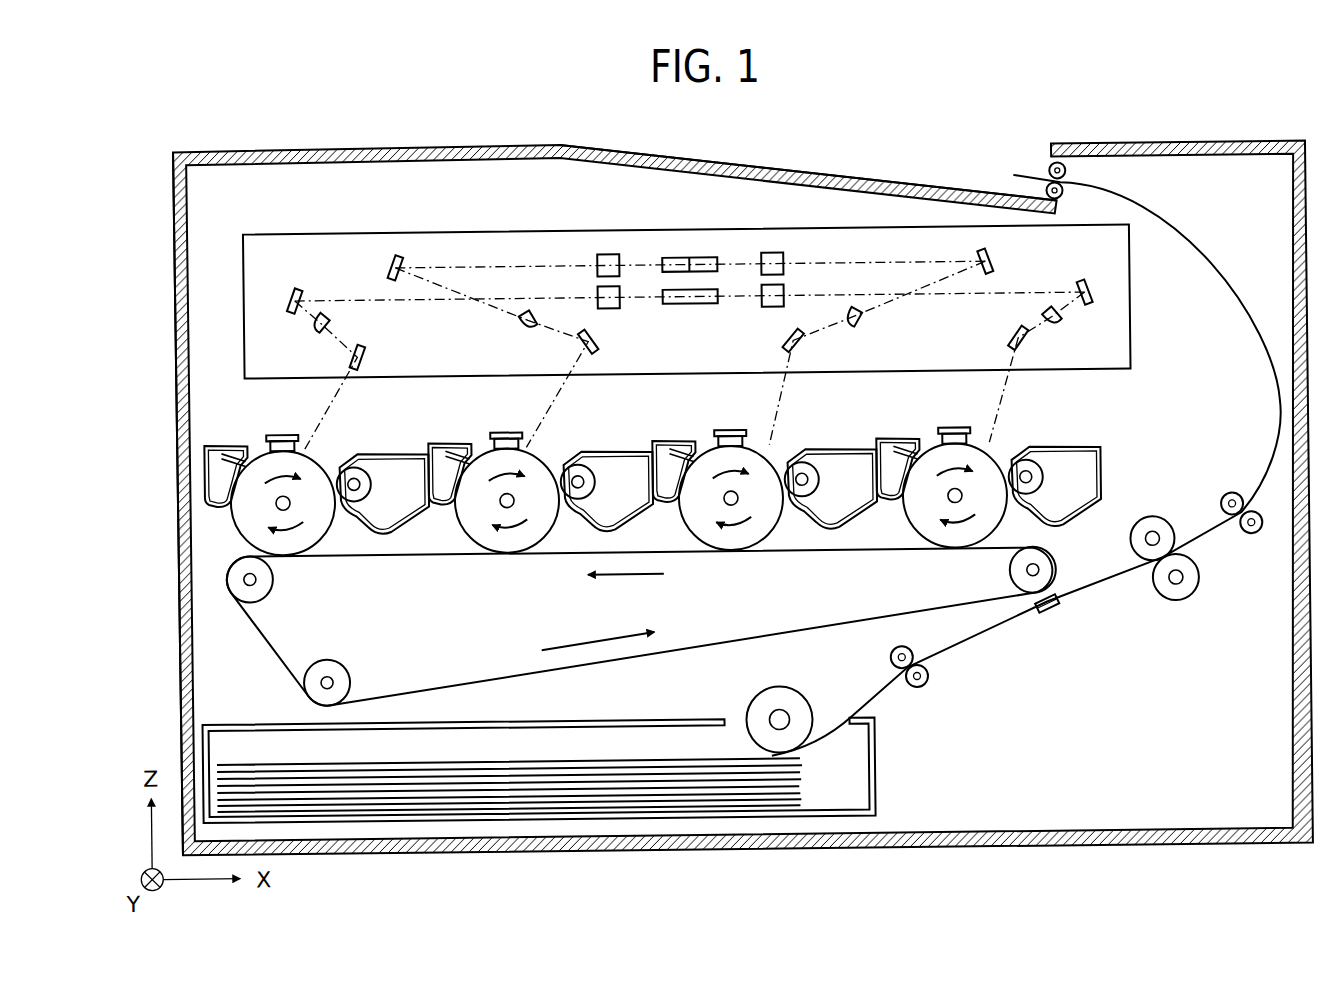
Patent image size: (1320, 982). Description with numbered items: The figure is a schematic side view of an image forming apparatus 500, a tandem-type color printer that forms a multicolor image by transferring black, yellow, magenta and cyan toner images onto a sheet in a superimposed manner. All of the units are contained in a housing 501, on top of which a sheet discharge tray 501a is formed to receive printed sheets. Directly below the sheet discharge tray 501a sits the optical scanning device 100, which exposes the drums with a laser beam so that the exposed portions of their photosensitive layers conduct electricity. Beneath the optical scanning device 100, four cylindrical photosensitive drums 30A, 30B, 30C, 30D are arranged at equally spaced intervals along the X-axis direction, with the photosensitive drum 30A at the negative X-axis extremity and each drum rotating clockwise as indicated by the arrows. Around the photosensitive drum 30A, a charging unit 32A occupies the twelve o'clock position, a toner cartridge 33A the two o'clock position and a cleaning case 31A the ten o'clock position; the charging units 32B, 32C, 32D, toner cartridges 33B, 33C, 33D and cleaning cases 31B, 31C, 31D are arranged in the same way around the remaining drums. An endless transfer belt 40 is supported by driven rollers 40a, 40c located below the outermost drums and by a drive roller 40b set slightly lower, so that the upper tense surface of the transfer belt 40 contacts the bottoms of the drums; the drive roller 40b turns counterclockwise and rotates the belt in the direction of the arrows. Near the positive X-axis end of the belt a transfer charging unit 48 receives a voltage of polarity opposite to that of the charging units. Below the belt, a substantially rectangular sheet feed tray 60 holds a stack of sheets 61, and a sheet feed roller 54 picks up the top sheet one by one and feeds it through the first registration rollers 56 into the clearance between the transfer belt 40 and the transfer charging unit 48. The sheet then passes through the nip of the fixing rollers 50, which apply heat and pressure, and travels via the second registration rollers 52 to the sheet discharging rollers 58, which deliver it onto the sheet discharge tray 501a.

The image forming apparatus 500 is at (934, 102).
The housing 501 is at (287, 146).
The sheet discharge tray 501a is at (801, 172).
The sheet discharging rollers 58 is at (1046, 162).
The optical scanning device 100 is at (600, 229).
The sheets 61 is at (554, 758).
The photosensitive drum 30A is at (329, 518).
The photosensitive drum 30B is at (525, 502).
The photosensitive drum 30C is at (749, 499).
The photosensitive drum 30D is at (973, 497).
The cleaning case 31A is at (221, 503).
The cleaning case 31B is at (447, 499).
The cleaning case 31C is at (671, 497).
The cleaning case 31D is at (895, 494).
The charging unit 32A is at (283, 430).
The charging unit 32B is at (495, 415).
The charging unit 32C is at (719, 413).
The charging unit 32D is at (943, 410).
The toner cartridge 33A is at (396, 450).
The toner cartridge 33B is at (607, 464).
The toner cartridge 33C is at (831, 461).
The toner cartridge 33D is at (1055, 459).
The transfer belt 40 is at (275, 651).
The driven roller 40a is at (269, 583).
The drive roller 40b is at (340, 661).
The driven roller 40c is at (1056, 572).
The transfer charging unit 48 is at (1052, 616).
The fixing rollers 50 is at (1179, 614).
The second registration rollers 52 is at (1243, 544).
The sheet feed roller 54 is at (755, 698).
The first registration rollers 56 is at (926, 690).
The sheet feed tray 60 is at (873, 787).